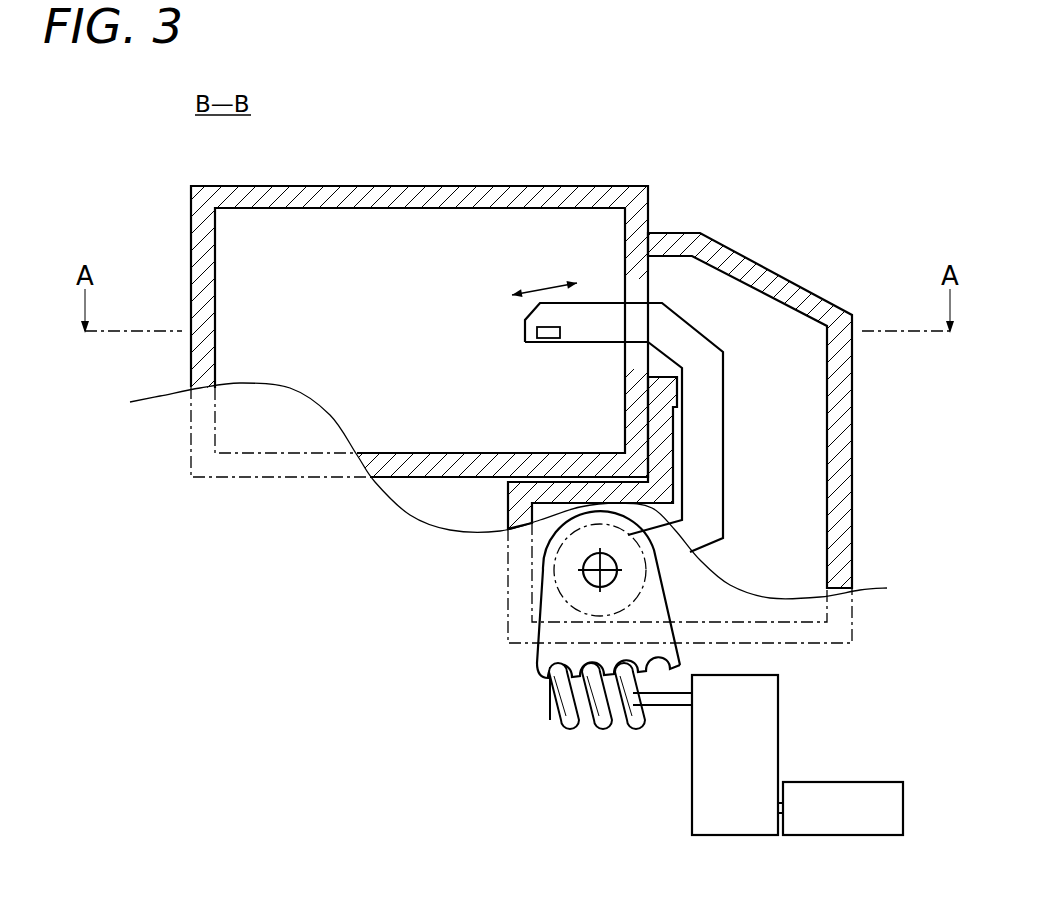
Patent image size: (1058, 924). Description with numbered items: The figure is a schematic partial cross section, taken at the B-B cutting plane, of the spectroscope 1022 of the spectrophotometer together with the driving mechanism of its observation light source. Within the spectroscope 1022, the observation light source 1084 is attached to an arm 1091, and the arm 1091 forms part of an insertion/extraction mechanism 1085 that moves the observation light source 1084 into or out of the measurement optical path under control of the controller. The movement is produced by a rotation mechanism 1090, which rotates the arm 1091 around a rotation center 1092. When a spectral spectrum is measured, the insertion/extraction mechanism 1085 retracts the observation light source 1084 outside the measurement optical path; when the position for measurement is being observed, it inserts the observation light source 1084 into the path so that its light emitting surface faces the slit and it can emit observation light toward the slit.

The spectroscope 1022 is at (840, 65).
The observation light source 1084 is at (548, 339).
The insertion/extraction mechanism 1085 is at (723, 483).
The arm 1091 is at (723, 397).
The rotation center 1092 is at (598, 571).
The rotation mechanism 1090 is at (778, 710).